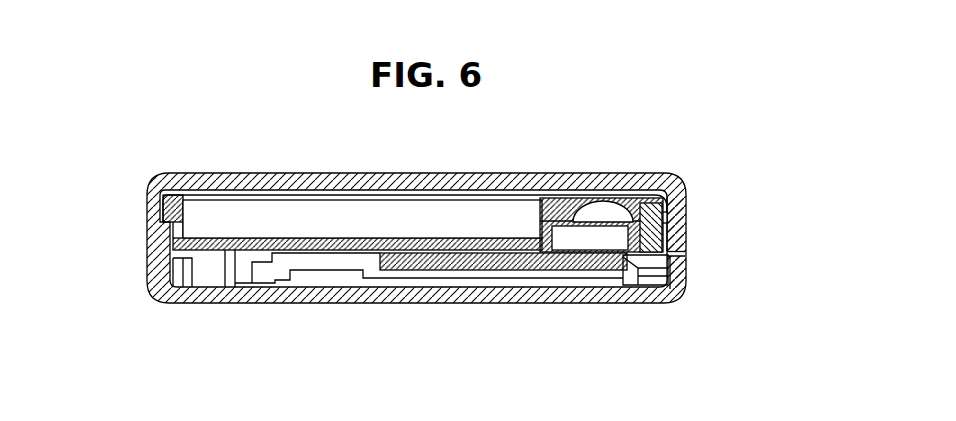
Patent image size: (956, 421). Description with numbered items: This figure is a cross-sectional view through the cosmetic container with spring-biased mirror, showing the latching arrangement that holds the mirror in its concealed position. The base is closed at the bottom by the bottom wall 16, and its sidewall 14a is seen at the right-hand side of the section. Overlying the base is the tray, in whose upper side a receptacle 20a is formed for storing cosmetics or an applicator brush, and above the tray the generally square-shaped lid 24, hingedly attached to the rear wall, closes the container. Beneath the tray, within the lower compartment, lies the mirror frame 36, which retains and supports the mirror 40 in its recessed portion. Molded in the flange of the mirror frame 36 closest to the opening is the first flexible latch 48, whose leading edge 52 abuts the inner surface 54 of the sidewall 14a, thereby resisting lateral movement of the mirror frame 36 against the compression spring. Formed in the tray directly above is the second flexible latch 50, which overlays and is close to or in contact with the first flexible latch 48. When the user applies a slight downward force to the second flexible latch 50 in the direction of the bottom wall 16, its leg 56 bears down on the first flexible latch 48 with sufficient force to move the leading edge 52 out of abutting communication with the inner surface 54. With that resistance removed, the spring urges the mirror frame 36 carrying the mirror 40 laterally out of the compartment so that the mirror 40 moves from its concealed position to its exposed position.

The bottom wall 16 is at (508, 293).
The sidewall 14a is at (688, 234).
The receptacle 20a is at (245, 220).
The lid 24 is at (440, 174).
The mirror frame 36 is at (473, 265).
The mirror 40 is at (427, 272).
The first flexible latch 48 is at (625, 282).
The second flexible latch 50 is at (582, 200).
The leading edge 52 is at (688, 260).
The inner surface 54 is at (688, 216).
The leg 56 is at (645, 232).